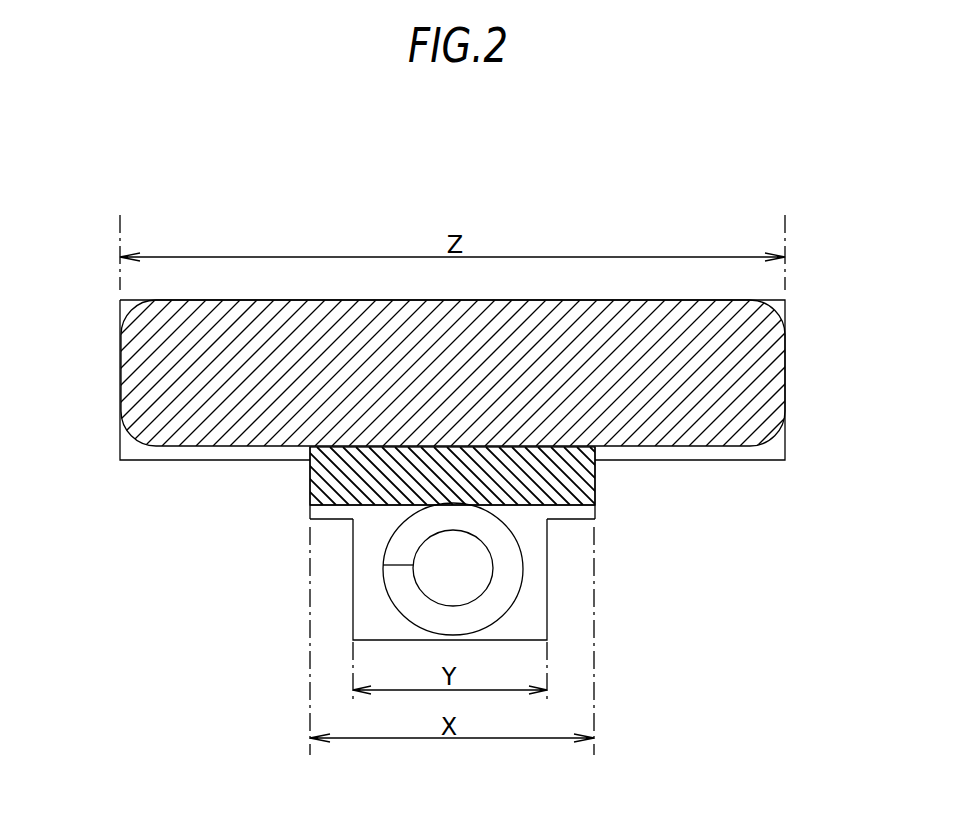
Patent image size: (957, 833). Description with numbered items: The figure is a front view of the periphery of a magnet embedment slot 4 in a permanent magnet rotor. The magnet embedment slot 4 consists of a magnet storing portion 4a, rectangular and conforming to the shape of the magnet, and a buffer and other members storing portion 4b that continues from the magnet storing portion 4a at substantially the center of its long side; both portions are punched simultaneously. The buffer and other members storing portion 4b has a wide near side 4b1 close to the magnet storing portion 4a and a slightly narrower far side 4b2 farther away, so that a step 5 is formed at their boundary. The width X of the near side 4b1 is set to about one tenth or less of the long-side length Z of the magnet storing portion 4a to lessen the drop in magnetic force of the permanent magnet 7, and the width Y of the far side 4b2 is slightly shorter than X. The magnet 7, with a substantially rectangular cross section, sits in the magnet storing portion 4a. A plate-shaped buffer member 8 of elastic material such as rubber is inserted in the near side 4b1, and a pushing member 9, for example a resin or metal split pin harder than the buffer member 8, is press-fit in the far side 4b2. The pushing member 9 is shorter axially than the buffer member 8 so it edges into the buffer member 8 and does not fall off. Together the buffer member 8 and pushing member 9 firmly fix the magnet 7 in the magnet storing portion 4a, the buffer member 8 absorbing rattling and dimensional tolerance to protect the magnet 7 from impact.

The magnet embedment slot 4 is at (815, 331).
The magnet storing portion 4a is at (778, 447).
The buffer and other members storing portion 4b is at (753, 493).
The near side 4b1 is at (595, 510).
The far side 4b2 is at (547, 613).
The step 5 is at (337, 510).
The permanent magnet 7 is at (145, 331).
The buffer member 8 is at (310, 478).
The pushing member 9 is at (397, 592).